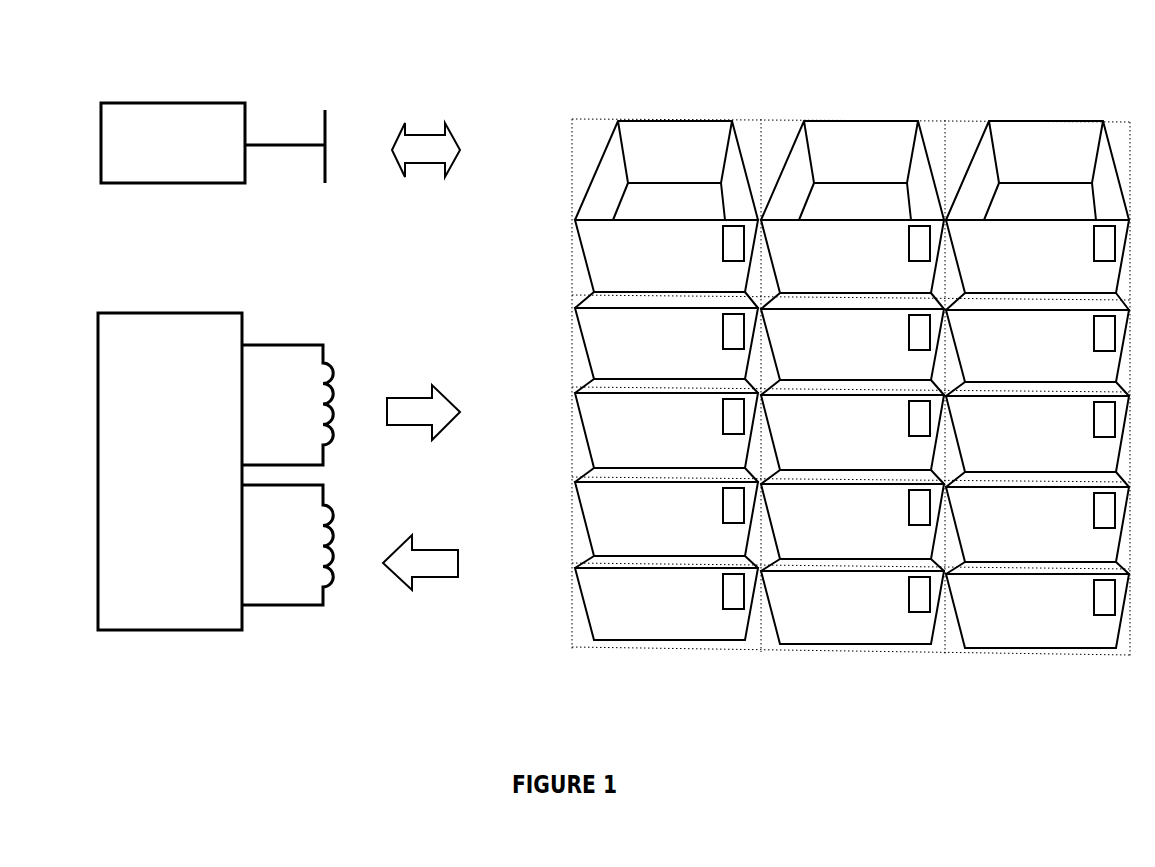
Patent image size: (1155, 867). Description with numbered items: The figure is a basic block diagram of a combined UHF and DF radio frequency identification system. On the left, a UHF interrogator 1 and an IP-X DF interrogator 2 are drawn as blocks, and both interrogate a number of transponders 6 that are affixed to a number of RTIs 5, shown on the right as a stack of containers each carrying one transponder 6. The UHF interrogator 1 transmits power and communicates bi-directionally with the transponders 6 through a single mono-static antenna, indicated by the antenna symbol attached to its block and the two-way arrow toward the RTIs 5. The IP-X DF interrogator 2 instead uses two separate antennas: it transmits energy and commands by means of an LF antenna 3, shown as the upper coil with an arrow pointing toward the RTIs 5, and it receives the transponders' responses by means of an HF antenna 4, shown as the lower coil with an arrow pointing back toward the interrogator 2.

The UHF interrogator 1 is at (103, 92).
The IP-X DF interrogator 2 is at (107, 312).
The LF antenna 3 is at (343, 362).
The HF antenna 4 is at (335, 592).
The RTI 5 is at (640, 145).
The transponder 6 is at (733, 243).